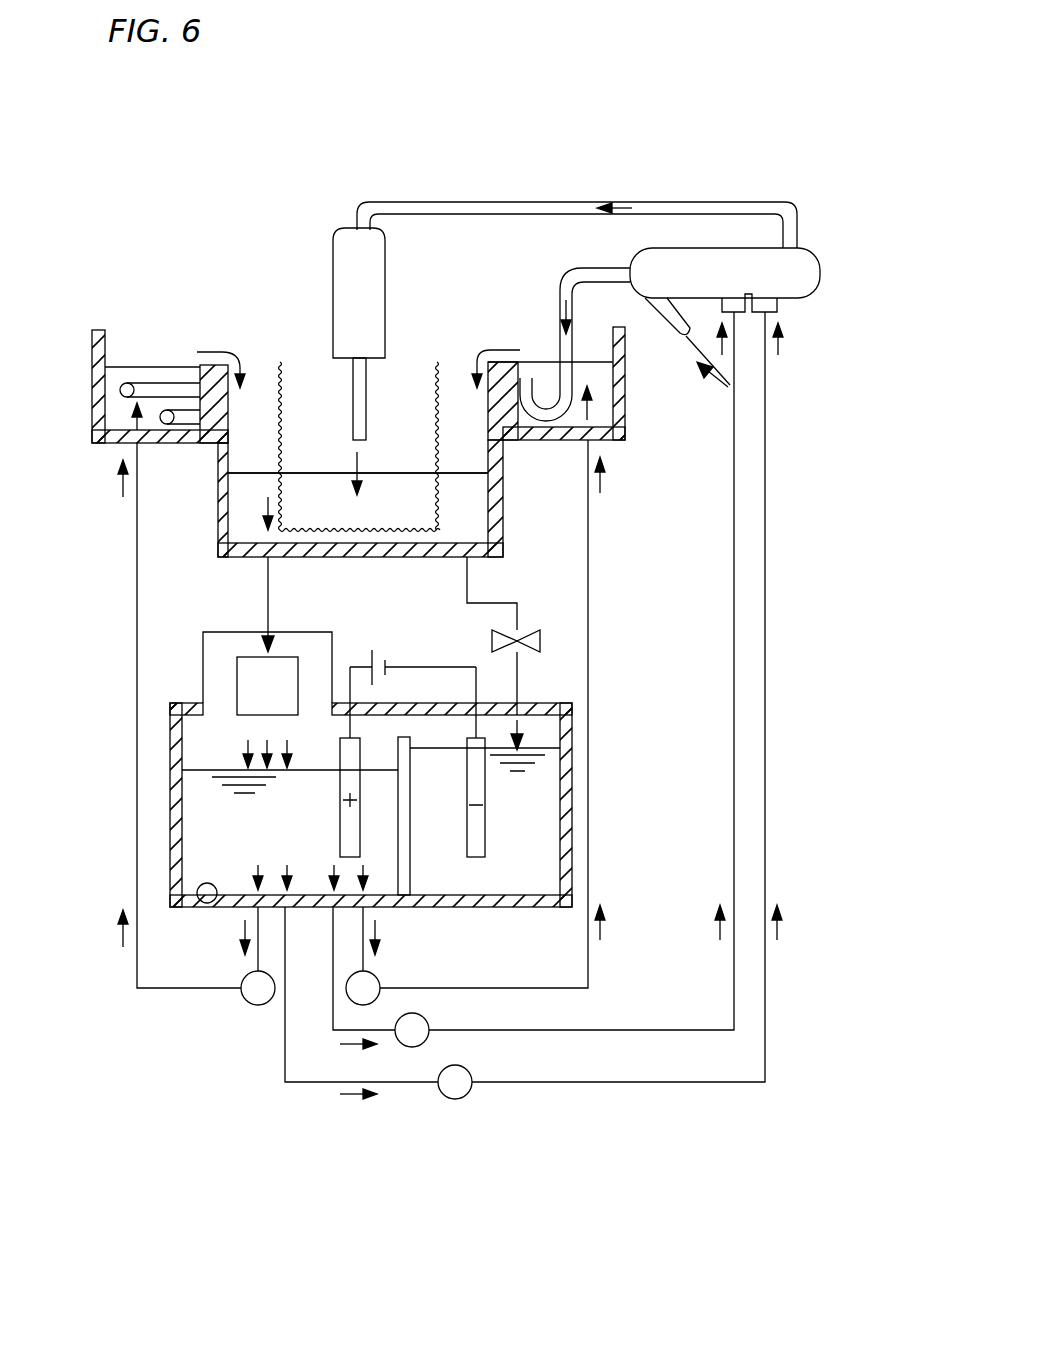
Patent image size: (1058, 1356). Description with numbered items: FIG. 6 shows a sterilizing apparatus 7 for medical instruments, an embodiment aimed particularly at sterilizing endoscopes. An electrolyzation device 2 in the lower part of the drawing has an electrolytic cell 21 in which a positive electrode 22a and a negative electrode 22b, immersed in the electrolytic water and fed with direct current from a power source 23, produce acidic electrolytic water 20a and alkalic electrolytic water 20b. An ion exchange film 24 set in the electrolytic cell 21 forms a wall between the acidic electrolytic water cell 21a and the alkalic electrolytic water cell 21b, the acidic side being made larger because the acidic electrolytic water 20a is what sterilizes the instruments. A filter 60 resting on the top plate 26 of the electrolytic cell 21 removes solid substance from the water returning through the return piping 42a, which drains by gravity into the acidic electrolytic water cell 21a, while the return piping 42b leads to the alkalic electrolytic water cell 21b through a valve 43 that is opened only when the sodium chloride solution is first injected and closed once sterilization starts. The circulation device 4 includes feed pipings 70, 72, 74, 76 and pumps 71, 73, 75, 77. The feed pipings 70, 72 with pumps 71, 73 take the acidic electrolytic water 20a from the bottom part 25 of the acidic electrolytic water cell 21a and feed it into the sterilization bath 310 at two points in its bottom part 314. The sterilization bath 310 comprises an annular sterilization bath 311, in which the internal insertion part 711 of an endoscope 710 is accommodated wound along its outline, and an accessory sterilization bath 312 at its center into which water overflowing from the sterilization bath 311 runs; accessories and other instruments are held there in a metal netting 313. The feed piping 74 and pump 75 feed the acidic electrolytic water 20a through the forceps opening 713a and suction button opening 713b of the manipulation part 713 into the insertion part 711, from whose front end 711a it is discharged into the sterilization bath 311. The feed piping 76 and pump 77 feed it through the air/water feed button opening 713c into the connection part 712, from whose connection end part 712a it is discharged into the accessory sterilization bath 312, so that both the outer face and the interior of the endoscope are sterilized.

The sterilizing apparatus 7 is at (284, 226).
The endoscope 710 is at (719, 184).
The connection part 712 is at (386, 262).
The connection end part 712a is at (353, 413).
The manipulation part 713 is at (803, 246).
The forceps opening 713a is at (683, 336).
The suction button opening 713b is at (737, 312).
The air/water feed button opening 713c is at (765, 304).
The sterilization bath 310 is at (370, 442).
The annular sterilization bath 311 is at (606, 376).
The accessory sterilization bath 312 is at (410, 395).
The metal netting 313 is at (280, 360).
The bottom part 314 is at (108, 414).
The internal insertion part 711 is at (180, 380).
The front end 711a is at (127, 382).
The feed piping 70 is at (137, 566).
The feed piping 72 is at (598, 542).
The feed piping 74 is at (734, 636).
The feed piping 76 is at (765, 600).
The return piping 42a is at (268, 583).
The return piping 42b is at (467, 585).
The valve 43 is at (541, 641).
The electrolyzation device 2 is at (379, 790).
The electrolytic cell 21 is at (573, 780).
The filter 60 is at (237, 673).
The acidic electrolytic water 20a is at (183, 832).
The alkalic electrolytic water 20b is at (573, 830).
The acidic electrolytic water cell 21a is at (183, 752).
The alkalic electrolytic water cell 21b is at (562, 735).
The positive electrode 22a is at (340, 830).
The negative electrode 22b is at (467, 830).
The power source 23 is at (379, 668).
The ion exchange film 24 is at (402, 738).
The bottom part 25 is at (205, 905).
The top plate 26 is at (537, 703).
The pump 71 is at (258, 1008).
The pump 73 is at (381, 968).
The pump 75 is at (430, 1012).
The pump 77 is at (472, 1062).
The circulation device 4 is at (240, 1110).